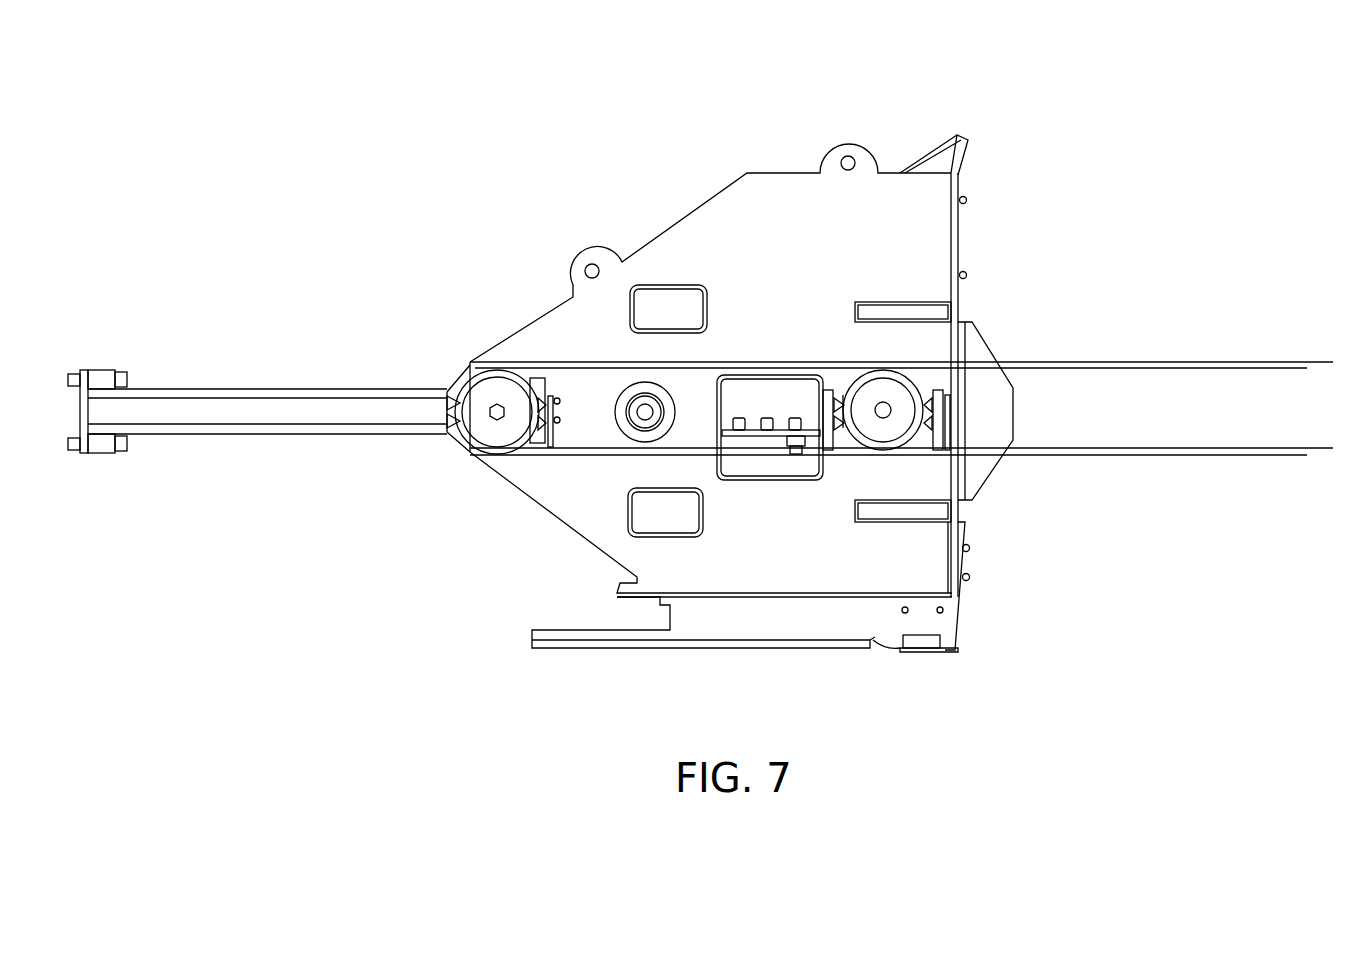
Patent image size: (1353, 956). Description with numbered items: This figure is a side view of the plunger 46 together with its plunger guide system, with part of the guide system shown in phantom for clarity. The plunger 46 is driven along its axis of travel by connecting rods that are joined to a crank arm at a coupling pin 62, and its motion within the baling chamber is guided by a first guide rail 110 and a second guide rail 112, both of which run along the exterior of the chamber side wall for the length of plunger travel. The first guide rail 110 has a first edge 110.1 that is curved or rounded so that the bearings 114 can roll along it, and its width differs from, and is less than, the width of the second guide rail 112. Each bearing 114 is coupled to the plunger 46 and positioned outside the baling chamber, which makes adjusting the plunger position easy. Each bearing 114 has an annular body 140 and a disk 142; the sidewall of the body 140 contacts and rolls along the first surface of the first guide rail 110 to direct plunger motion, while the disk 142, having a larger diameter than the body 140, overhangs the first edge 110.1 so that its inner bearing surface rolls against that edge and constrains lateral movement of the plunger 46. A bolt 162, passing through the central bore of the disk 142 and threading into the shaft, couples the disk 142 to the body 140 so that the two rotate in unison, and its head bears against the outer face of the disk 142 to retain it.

The plunger 46 is at (893, 112).
The coupling pin 62 is at (175, 415).
The first guide rail 110 is at (1122, 471).
The first edge 110.1 is at (1307, 458).
The second guide rail 112 is at (1307, 370).
The bearing 114 is at (462, 376).
The body 140 is at (913, 448).
The disk 142 is at (850, 433).
The bolt 162 is at (887, 406).